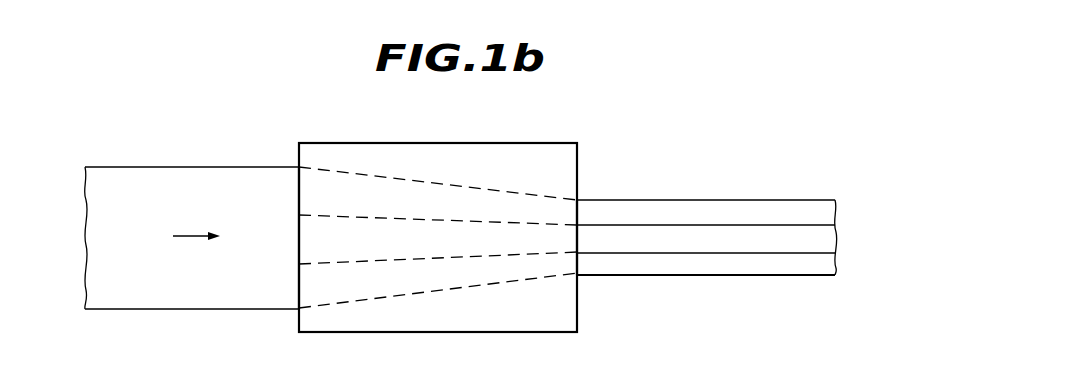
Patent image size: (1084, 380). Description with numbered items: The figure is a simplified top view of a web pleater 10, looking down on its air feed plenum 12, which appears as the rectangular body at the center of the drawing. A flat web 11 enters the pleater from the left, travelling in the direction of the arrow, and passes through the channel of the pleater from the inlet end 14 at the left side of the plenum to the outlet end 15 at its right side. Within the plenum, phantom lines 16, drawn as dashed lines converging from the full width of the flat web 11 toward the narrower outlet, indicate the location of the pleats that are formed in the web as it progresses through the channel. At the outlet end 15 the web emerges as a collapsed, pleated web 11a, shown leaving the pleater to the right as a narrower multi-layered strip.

The web pleater 10 is at (553, 133).
The flat web 11 is at (187, 167).
The pleated web 11a is at (663, 200).
The air feed plenum 12 is at (462, 173).
The inlet end 14 is at (299, 277).
The outlet end 15 is at (577, 261).
The phantom lines 16 is at (471, 188).